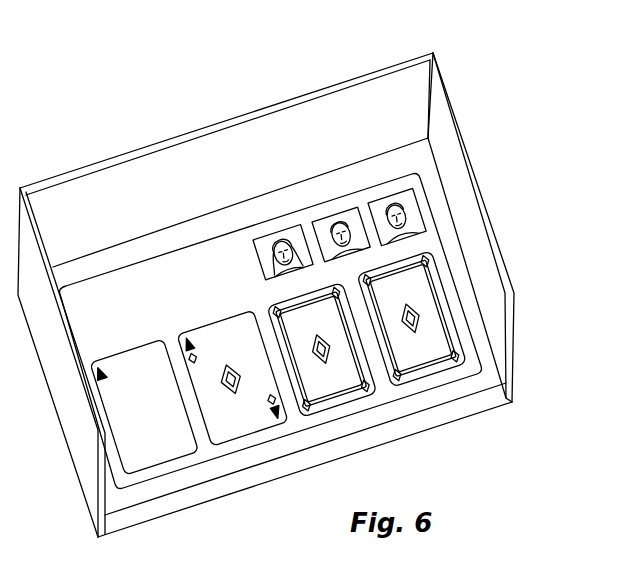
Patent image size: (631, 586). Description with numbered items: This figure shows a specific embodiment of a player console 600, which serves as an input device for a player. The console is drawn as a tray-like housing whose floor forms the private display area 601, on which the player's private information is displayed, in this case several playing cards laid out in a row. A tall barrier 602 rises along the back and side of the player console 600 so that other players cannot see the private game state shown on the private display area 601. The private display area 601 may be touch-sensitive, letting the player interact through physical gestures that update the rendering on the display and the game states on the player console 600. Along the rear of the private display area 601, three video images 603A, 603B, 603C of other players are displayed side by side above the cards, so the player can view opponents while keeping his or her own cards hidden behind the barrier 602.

The player console 600 is at (302, 275).
The private display area 601 is at (385, 395).
The barrier 602 is at (513, 343).
The video image 603A is at (265, 235).
The video image 603B is at (322, 222).
The video image 603C is at (380, 200).